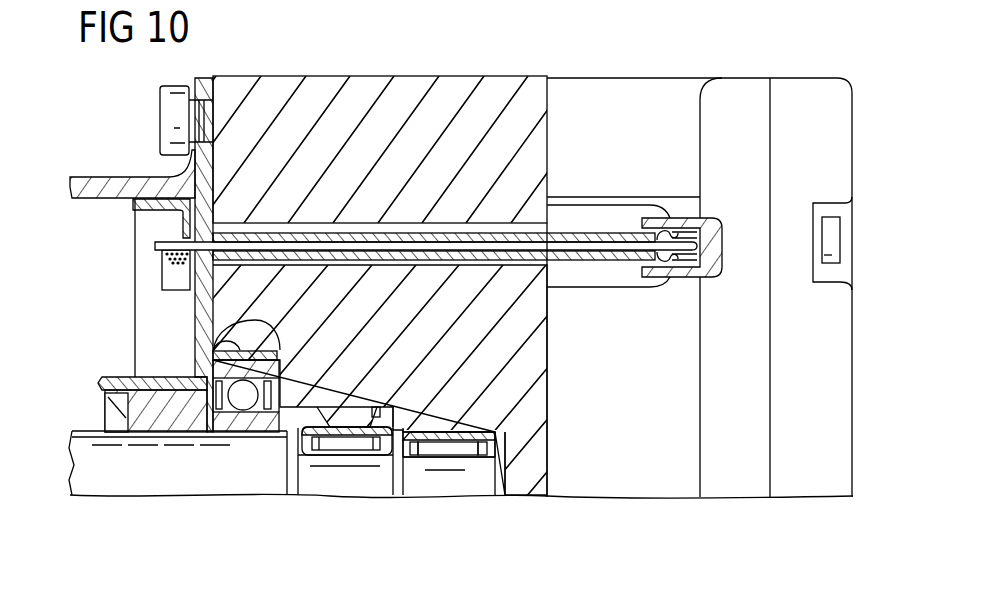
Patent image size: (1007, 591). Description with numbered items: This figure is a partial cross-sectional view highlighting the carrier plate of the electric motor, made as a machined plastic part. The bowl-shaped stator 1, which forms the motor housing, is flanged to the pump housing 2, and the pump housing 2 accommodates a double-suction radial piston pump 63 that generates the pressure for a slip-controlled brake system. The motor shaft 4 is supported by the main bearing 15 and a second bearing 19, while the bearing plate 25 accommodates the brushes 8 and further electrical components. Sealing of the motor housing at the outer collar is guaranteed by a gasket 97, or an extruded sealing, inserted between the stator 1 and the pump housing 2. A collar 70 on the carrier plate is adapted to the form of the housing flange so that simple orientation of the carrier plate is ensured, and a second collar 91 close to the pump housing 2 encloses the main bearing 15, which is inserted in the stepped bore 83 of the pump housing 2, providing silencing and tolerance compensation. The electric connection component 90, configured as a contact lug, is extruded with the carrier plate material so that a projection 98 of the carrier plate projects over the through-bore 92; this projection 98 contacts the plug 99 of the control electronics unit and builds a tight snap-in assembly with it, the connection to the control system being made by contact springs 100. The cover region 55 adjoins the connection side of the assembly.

The stator 1 is at (90, 177).
The pump housing 2 is at (500, 118).
The shaft 4 is at (253, 475).
The brushes 8 is at (165, 270).
The main bearing 15 is at (230, 414).
The bearing 19 is at (450, 450).
The bearing plate 25 is at (202, 292).
The cover 55 is at (815, 102).
The double-suction radial piston pump 63 is at (348, 410).
The collar 70 is at (188, 203).
The stepped bore 83 is at (213, 318).
The electric connection component 90 is at (673, 232).
The collar 91 is at (210, 338).
The through-bore 92 is at (555, 222).
The gasket 97 is at (213, 78).
The projection 98 is at (608, 261).
The plug 99 is at (660, 278).
The contact springs 100 is at (697, 216).